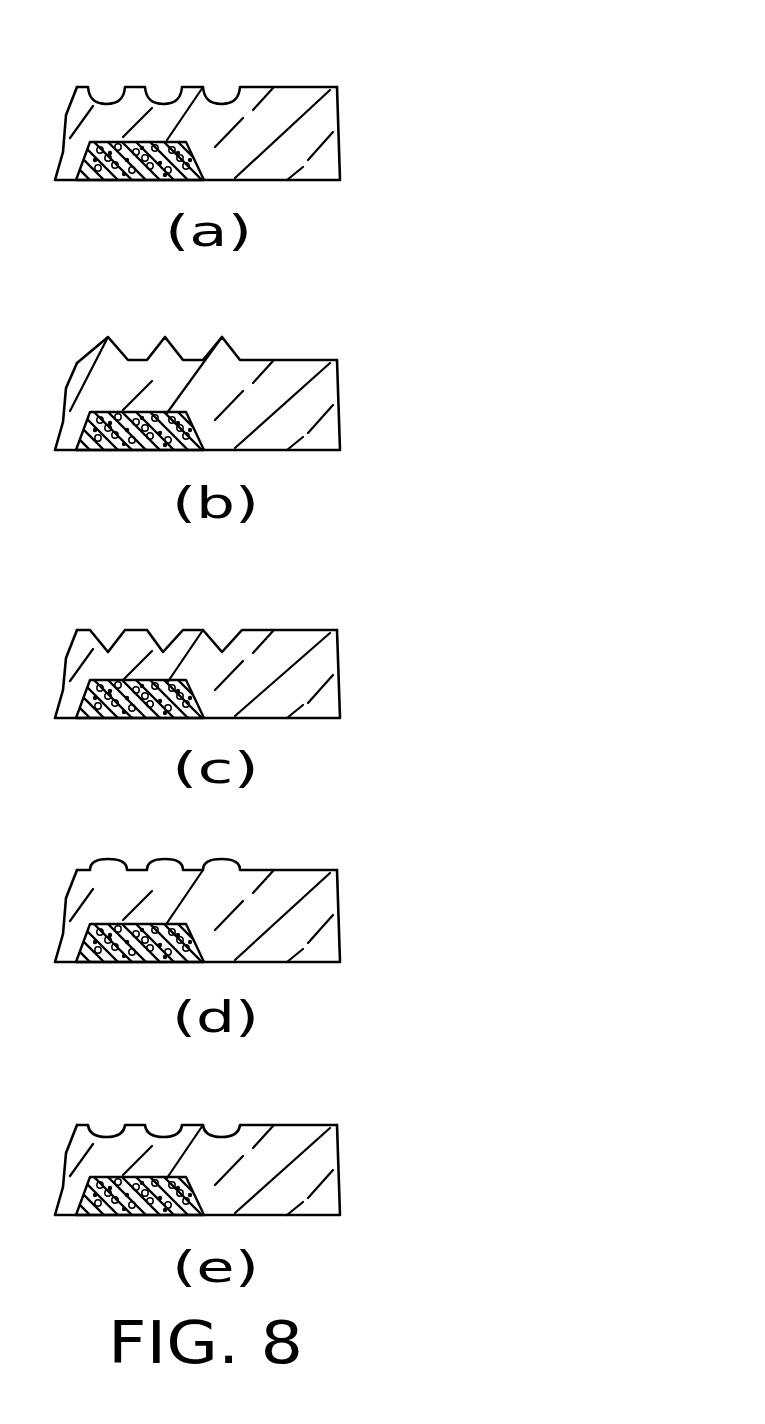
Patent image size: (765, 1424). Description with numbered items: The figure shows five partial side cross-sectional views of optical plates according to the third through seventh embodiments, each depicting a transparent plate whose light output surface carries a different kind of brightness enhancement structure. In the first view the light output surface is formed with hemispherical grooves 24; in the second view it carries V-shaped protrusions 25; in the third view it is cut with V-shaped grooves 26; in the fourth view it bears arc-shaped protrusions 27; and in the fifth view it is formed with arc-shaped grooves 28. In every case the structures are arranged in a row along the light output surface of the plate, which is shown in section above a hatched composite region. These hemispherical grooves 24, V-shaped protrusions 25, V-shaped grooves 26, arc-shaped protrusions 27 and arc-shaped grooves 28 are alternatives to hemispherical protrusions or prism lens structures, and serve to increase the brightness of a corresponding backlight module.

The hemispherical grooves 24 is at (222, 92).
The V-shaped protrusions 25 is at (233, 350).
The V-shaped grooves 26 is at (222, 635).
The arc-shaped protrusions 27 is at (222, 868).
The arc-shaped grooves 28 is at (223, 1127).